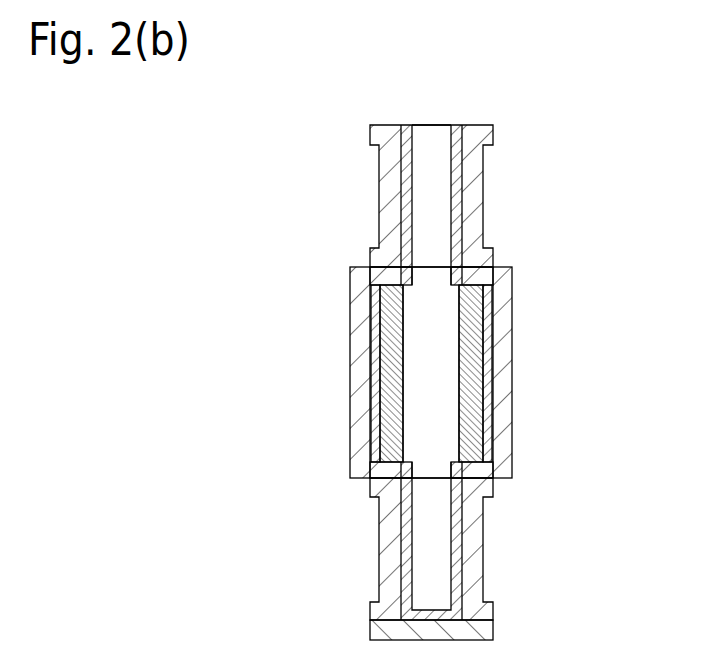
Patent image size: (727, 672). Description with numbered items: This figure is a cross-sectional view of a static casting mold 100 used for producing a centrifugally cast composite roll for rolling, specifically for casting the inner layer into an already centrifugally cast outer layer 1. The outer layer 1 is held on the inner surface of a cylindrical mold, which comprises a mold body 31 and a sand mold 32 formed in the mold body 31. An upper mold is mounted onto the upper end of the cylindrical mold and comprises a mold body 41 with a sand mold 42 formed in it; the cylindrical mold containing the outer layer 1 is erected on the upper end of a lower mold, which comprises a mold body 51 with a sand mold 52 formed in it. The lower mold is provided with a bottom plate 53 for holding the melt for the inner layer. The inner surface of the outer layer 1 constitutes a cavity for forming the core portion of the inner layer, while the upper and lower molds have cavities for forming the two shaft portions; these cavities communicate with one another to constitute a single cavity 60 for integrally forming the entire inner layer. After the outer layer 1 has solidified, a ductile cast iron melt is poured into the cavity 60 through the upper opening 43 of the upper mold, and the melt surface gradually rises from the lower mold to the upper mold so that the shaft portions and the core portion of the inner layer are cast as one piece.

The static casting mold 100 is at (590, 273).
The outer layer 1 is at (478, 410).
The mold body 31 is at (505, 358).
The sand mold 32 is at (489, 308).
The mold body 41 is at (478, 160).
The sand mold 42 is at (463, 218).
The upper opening 43 is at (435, 126).
The mold body 51 is at (478, 528).
The sand mold 52 is at (463, 572).
The bottom plate 53 is at (493, 630).
The cavity 60 is at (440, 380).